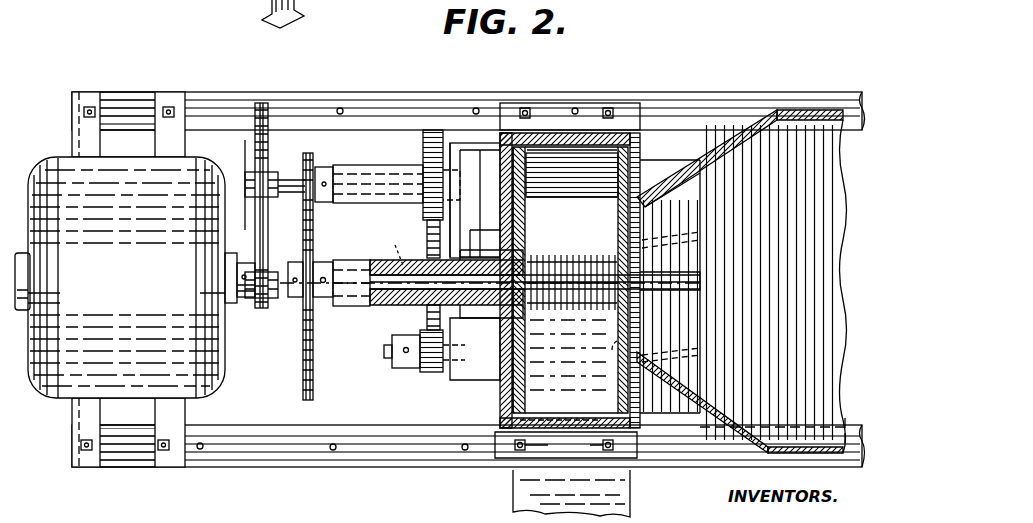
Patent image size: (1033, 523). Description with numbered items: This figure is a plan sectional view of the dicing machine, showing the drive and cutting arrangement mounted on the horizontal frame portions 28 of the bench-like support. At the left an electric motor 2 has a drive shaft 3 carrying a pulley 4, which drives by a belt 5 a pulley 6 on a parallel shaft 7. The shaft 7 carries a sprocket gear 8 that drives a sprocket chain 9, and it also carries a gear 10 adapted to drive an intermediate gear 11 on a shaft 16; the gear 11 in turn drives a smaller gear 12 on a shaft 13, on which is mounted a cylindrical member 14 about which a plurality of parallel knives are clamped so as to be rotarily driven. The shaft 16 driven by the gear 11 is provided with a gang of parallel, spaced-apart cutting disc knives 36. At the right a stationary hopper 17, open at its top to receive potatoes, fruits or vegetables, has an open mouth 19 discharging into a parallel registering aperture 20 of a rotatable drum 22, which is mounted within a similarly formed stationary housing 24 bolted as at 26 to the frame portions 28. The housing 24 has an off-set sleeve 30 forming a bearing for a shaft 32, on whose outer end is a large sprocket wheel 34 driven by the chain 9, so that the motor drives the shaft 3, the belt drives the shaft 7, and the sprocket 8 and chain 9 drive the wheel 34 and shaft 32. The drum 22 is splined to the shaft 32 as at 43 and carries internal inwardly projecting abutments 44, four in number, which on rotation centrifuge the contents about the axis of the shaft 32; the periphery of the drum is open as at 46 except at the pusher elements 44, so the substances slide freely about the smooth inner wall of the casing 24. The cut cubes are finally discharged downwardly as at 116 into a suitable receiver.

The electric motor 2 is at (135, 277).
The drive shaft 3 is at (276, 70).
The pulley 4 is at (655, 80).
The belt 5 is at (262, 148).
The pulley 6 is at (257, 160).
The parallel shaft 7 is at (246, 182).
The sprocket gear 8 is at (310, 152).
The sprocket chain 9 is at (314, 247).
The gear 10 is at (424, 150).
The intermediate gear 11 is at (426, 240).
The smaller gear 12 is at (434, 374).
The shaft 13 is at (400, 370).
The cylindrical member 14 is at (622, 345).
The shaft 16 is at (388, 246).
The stationary hopper 17 is at (818, 110).
The open mouth 19 is at (660, 210).
The registering aperture 20 is at (590, 175).
The rotatable drum 22 is at (555, 180).
The stationary housing 24 is at (495, 158).
The bolts 26 is at (567, 448).
The horizontal frame portions 28 is at (356, 100).
The off-set sleeve 30 is at (347, 308).
The shaft 32 is at (382, 300).
The sprocket wheel 34 is at (301, 366).
The cutting disc knives 36 is at (660, 222).
The spline 43 is at (514, 241).
The inwardly projecting abutments 44 is at (618, 210).
The open periphery of drum 46 is at (500, 430).
The downward discharge 116 is at (522, 507).